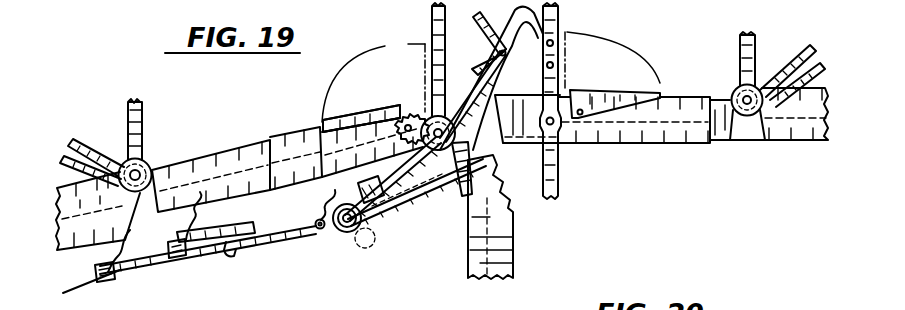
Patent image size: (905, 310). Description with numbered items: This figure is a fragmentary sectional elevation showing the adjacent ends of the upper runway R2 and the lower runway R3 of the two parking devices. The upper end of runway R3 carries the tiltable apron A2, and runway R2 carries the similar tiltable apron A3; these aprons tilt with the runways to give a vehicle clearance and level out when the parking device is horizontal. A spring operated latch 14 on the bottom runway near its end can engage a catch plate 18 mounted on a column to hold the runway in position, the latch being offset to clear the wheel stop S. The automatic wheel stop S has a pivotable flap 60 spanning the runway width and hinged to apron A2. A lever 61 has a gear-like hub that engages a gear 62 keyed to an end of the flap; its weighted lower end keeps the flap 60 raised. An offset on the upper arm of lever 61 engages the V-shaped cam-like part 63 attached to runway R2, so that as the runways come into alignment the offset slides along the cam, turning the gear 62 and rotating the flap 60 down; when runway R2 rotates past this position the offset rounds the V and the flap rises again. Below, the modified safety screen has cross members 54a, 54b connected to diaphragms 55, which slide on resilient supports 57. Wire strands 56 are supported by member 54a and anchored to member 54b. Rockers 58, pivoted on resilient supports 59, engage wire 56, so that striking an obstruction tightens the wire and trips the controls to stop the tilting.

The tiltable apron A2 is at (189, 141).
The tiltable apron A3 is at (703, 78).
The lower runway R3 is at (90, 113).
The upper runway R2 is at (785, 57).
The automatic wheel stop S is at (406, 50).
The pivotable flap 60 is at (360, 116).
The gear 62 is at (416, 59).
The V-shaped cam-like part 63 is at (487, 37).
The lever 61 is at (478, 125).
The resilient support 59 is at (330, 221).
The rocker 58 is at (414, 186).
The spring operated latch 14 is at (434, 181).
The catch plate 18 is at (462, 196).
The diaphragm 55 is at (211, 236).
The cross member 54a is at (107, 281).
The cross member 54b is at (259, 231).
The wire strand 56 is at (205, 247).
The resilient support 57 is at (182, 259).